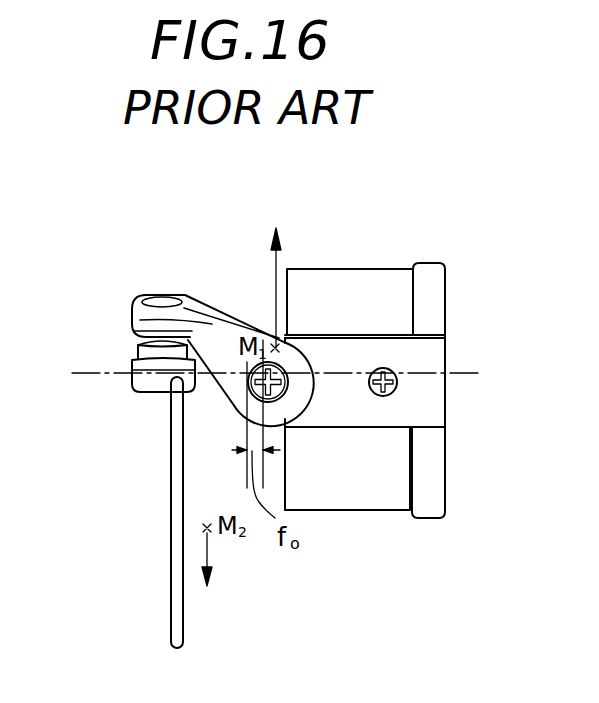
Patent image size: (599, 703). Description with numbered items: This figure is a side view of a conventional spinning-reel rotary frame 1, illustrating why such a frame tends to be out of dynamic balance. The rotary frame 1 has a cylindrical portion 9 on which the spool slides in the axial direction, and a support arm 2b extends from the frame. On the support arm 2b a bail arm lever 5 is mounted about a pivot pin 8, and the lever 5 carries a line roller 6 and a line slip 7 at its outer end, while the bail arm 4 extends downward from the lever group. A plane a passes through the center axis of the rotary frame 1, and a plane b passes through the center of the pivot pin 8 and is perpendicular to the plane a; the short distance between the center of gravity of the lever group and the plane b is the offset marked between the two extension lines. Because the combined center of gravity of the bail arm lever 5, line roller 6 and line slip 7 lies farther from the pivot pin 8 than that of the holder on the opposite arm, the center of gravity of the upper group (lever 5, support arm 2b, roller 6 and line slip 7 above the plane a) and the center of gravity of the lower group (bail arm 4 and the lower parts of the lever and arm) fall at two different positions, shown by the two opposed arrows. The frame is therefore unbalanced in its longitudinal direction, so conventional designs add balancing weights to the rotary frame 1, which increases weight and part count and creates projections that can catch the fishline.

The rotary frame 1 is at (440, 495).
The support arm 2b is at (397, 417).
The bail arm 4 is at (170, 593).
The bail arm lever 5 is at (231, 327).
The line roller 6 is at (147, 352).
The line slip 7 is at (145, 383).
The pivot pin 8 is at (278, 392).
The cylindrical portion 9 is at (378, 283).
The plane a is at (467, 372).
The plane b is at (265, 434).